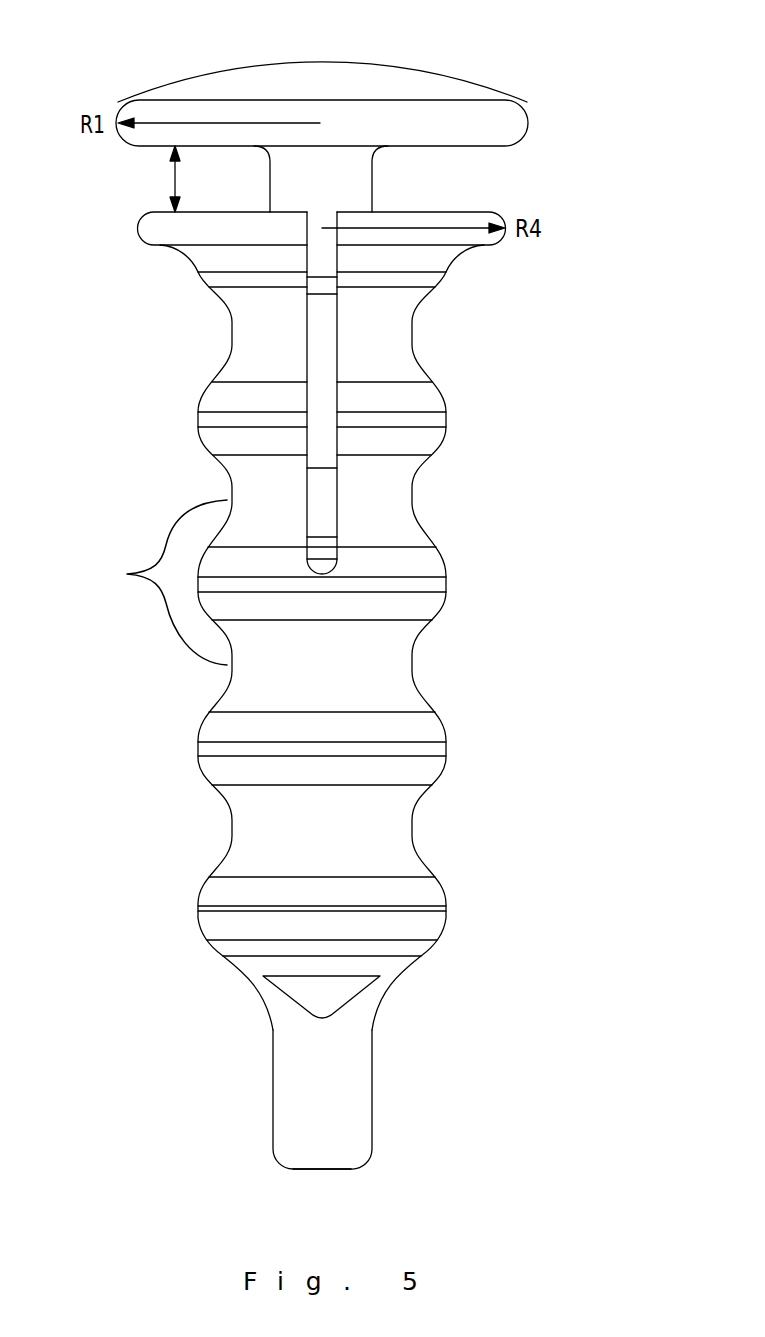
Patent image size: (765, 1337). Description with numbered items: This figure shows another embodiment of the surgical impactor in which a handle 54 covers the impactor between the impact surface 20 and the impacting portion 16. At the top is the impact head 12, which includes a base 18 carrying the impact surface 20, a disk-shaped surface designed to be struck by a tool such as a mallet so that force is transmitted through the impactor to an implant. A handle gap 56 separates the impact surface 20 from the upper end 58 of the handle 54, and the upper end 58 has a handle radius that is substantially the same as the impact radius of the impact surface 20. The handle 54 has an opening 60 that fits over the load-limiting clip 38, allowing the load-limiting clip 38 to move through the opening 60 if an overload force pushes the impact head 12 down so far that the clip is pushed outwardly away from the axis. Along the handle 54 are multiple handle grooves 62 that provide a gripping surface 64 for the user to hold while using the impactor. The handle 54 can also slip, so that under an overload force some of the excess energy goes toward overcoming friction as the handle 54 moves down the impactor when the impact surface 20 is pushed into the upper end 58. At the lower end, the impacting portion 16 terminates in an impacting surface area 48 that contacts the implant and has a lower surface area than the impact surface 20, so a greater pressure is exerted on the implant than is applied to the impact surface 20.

The impact head 12 is at (453, 146).
The impacting portion 16 is at (372, 1078).
The base 18 is at (372, 183).
The impact surface 20 is at (355, 71).
The load-limiting clip 38 is at (330, 316).
The impacting surface area 48 is at (335, 1170).
The handle 54 is at (442, 532).
The handle gap 56 is at (172, 178).
The upper end 58 is at (138, 228).
The opening 60 is at (338, 257).
The handle groove 62 is at (162, 582).
The gripping surface 64 is at (198, 418).